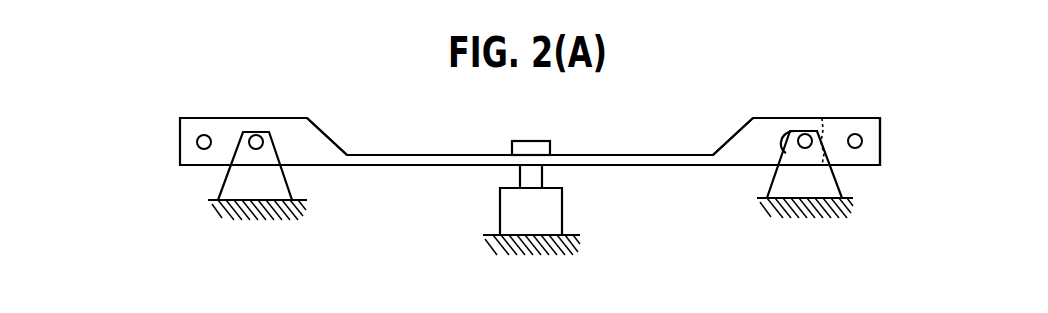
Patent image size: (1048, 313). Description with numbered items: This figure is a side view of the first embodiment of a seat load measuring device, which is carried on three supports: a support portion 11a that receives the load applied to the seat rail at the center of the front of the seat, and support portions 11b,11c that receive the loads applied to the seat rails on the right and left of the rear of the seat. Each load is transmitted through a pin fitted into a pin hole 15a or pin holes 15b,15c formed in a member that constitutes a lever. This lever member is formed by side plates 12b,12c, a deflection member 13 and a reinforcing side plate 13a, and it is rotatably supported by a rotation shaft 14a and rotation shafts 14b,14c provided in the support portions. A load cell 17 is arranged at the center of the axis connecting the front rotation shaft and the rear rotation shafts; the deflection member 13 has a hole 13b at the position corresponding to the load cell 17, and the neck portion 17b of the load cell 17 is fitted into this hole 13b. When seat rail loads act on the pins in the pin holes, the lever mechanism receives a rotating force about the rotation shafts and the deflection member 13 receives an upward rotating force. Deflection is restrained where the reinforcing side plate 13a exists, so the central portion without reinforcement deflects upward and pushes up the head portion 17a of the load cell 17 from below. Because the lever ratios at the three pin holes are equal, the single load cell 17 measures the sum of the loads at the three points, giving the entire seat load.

The deflection member 13 is at (445, 155).
The reinforcing side plate 13a is at (317, 139).
The hole 13b is at (543, 162).
The support portion 11a is at (303, 192).
The rotation shaft 14a is at (258, 140).
The pin hole 15a is at (204, 135).
The load cell 17 is at (551, 212).
The head portion 17a is at (541, 146).
The neck portion 17b is at (520, 175).
The support portions 11b,11c is at (848, 188).
The rotation shafts 14b,14c is at (805, 138).
The pin holes 15b,15c is at (862, 137).
The side plates 12b,12c is at (868, 153).